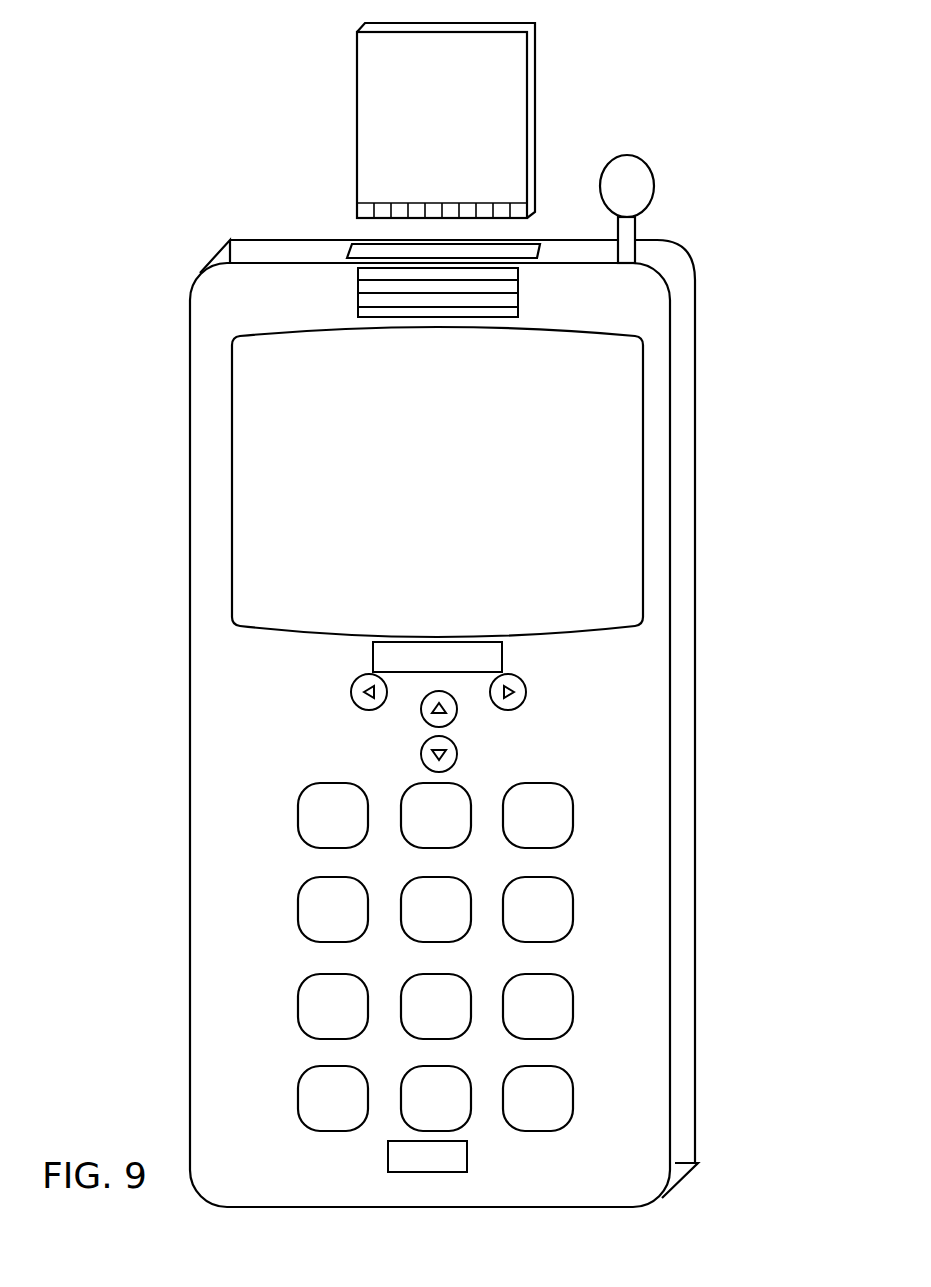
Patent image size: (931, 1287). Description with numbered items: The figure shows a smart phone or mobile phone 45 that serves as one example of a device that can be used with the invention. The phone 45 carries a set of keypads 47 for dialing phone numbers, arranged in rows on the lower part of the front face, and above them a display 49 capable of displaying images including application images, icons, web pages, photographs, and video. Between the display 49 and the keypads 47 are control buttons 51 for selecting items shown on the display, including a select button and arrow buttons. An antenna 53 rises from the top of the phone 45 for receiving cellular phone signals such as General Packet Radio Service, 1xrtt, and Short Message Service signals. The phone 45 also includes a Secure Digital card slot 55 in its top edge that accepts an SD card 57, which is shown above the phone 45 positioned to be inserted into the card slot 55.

The smart phone or mobile phone 45 is at (178, 292).
The keypads 47 is at (600, 808).
The display 49 is at (645, 480).
The control buttons 51 is at (387, 715).
The antenna 53 is at (655, 185).
The Secure Digital (SD) card slot 55 is at (383, 253).
The SD card 57 is at (537, 86).